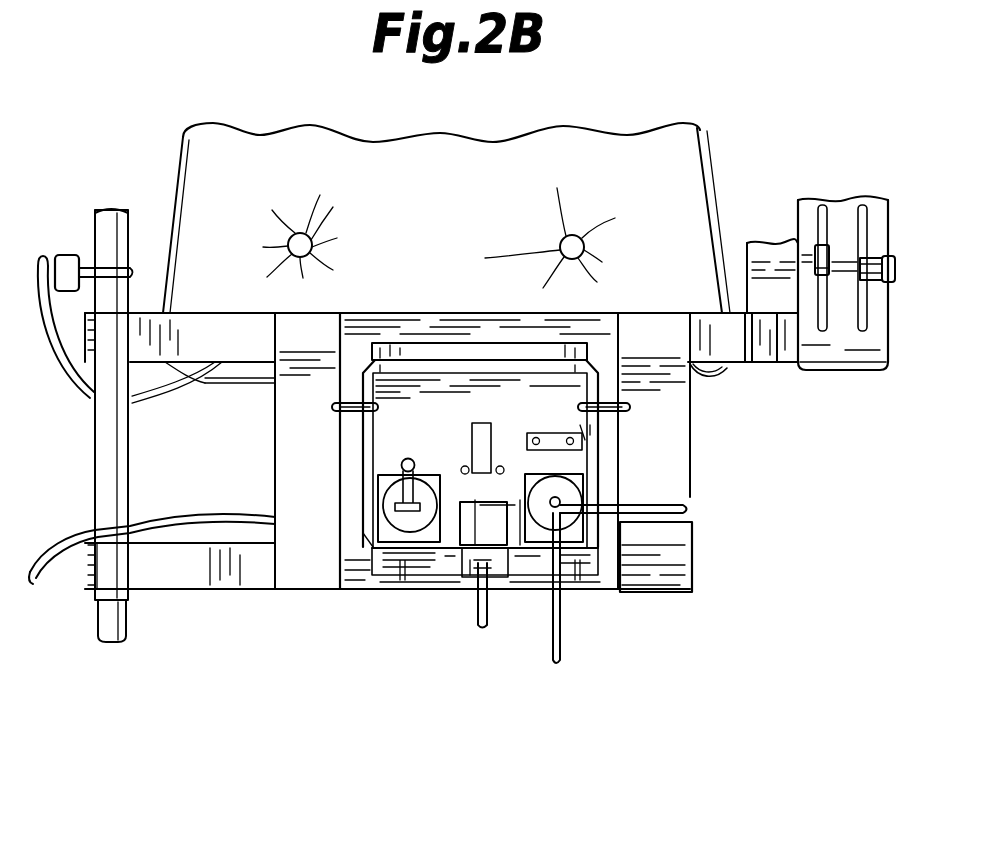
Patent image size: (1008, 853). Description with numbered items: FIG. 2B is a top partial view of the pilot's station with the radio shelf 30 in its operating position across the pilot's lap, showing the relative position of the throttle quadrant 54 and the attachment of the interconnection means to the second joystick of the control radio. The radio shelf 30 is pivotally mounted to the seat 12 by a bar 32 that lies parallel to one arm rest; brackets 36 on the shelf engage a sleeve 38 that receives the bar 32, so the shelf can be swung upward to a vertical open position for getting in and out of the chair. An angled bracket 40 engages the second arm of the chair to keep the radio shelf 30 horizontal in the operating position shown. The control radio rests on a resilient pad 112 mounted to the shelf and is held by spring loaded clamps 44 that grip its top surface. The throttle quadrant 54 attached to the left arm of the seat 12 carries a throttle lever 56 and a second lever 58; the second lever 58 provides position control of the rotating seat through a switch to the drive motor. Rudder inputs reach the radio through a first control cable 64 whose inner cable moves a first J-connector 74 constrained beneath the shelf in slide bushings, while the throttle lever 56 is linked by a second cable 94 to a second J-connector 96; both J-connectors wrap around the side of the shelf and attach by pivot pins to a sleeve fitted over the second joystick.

The seat 12 is at (713, 164).
The radio shelf 30 is at (692, 537).
The bar 32 is at (100, 628).
The brackets 36 is at (218, 591).
The sleeve 38 is at (94, 461).
The angled bracket 40 is at (752, 364).
The spring loaded clamps 44 is at (340, 408).
The throttle quadrant 54 is at (890, 360).
The throttle lever 56 is at (830, 250).
The second lever 58 is at (888, 257).
The first control cable 64 is at (54, 550).
The first J-connector 74 is at (690, 505).
The second cable 94 is at (82, 393).
The second J-connector 96 is at (552, 655).
The resilient pad 112 is at (632, 575).